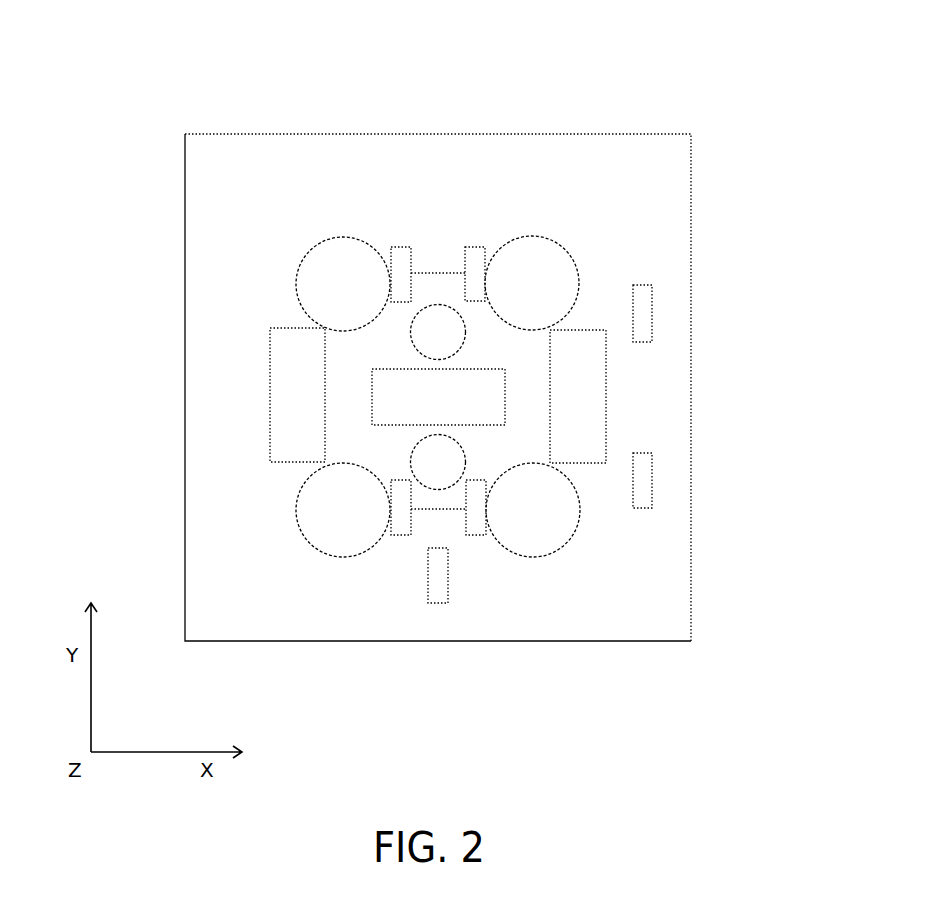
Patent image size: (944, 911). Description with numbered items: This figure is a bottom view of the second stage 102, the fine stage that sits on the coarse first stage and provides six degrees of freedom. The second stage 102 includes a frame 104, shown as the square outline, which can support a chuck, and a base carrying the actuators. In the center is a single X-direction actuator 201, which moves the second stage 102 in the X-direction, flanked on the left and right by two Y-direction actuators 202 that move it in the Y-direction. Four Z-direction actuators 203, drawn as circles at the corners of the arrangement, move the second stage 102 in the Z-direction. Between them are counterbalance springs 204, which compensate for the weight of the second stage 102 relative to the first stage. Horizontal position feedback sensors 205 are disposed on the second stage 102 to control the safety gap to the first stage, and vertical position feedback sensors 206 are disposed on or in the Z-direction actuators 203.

The second stage 102 is at (164, 93).
The frame 104 is at (185, 342).
The X-direction actuator 201 is at (457, 409).
The Y-direction actuator 202 is at (270, 425).
The Z-direction actuator 203 is at (363, 297).
The counterbalance spring 204 is at (457, 344).
The horizontal position feedback sensor 205 is at (652, 313).
The vertical position feedback sensor 206 is at (400, 247).